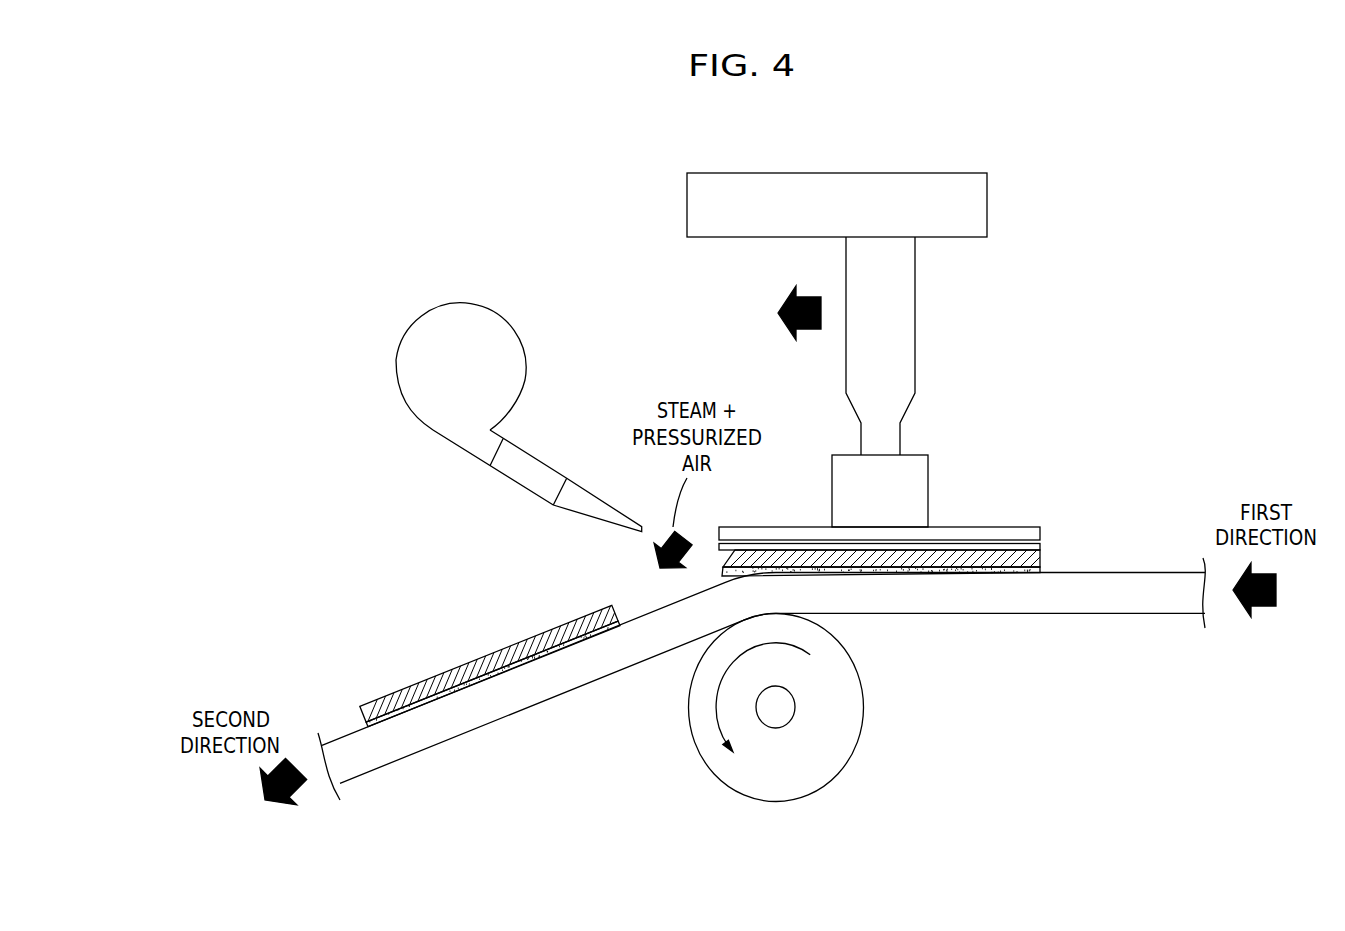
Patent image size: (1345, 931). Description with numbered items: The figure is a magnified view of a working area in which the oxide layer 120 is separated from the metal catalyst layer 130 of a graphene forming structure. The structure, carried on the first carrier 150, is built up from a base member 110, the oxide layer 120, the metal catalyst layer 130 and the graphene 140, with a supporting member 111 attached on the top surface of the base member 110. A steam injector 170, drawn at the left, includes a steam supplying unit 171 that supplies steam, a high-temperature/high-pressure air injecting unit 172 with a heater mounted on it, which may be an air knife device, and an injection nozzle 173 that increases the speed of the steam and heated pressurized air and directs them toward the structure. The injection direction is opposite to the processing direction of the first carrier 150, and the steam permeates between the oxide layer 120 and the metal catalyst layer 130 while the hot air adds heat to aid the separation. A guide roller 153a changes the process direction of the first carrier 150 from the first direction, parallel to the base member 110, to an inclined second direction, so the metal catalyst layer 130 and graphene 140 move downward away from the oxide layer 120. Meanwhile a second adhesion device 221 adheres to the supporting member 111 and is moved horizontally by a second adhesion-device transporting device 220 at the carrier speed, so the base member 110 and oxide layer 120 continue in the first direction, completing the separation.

The second adhesion-device transporting device 220 is at (980, 202).
The second adhesion device 221 is at (908, 342).
The supporting member 111 is at (922, 477).
The base member 110 is at (1040, 530).
The oxide layer 120 is at (1040, 543).
The metal catalyst layer 130 is at (1040, 558).
The graphene 140 is at (1040, 570).
The first carrier 150 is at (1144, 607).
The guide roller 153a is at (853, 717).
The steam injector 170 is at (522, 396).
The steam supplying unit 171 is at (523, 462).
The high-temperature/high-pressure air injecting unit 172 is at (510, 340).
The injection nozzle 173 is at (592, 498).